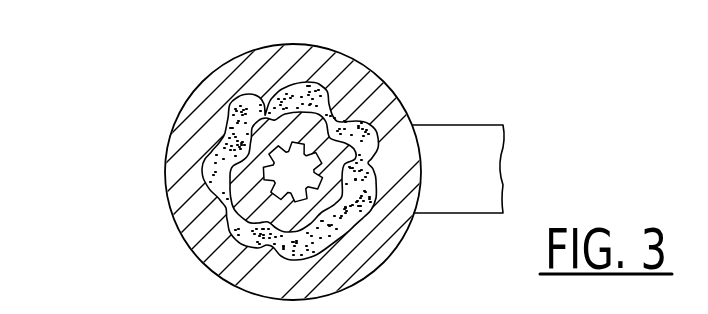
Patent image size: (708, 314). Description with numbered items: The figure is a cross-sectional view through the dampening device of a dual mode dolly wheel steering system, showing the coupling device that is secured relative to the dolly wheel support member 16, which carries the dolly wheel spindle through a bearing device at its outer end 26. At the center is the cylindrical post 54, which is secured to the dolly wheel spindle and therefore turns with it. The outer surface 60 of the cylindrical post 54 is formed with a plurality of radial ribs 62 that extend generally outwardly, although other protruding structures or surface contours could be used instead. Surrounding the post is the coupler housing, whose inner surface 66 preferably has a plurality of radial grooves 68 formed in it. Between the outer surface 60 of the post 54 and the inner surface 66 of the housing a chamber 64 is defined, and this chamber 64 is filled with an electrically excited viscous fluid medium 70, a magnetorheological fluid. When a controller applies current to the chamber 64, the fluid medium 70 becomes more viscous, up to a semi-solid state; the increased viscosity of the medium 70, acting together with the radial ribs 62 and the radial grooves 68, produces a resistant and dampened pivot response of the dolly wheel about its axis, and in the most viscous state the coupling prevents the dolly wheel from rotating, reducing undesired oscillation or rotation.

The support member 16 is at (495, 158).
The outer end 26 is at (437, 187).
The cylindrical post 54 is at (374, 144).
The outer surface 60 is at (333, 158).
The radial ribs 62 is at (331, 101).
The chamber 64 is at (368, 214).
The inner surface 66 is at (221, 274).
The radial grooves 68 is at (201, 163).
The viscous fluid medium 70 is at (332, 112).